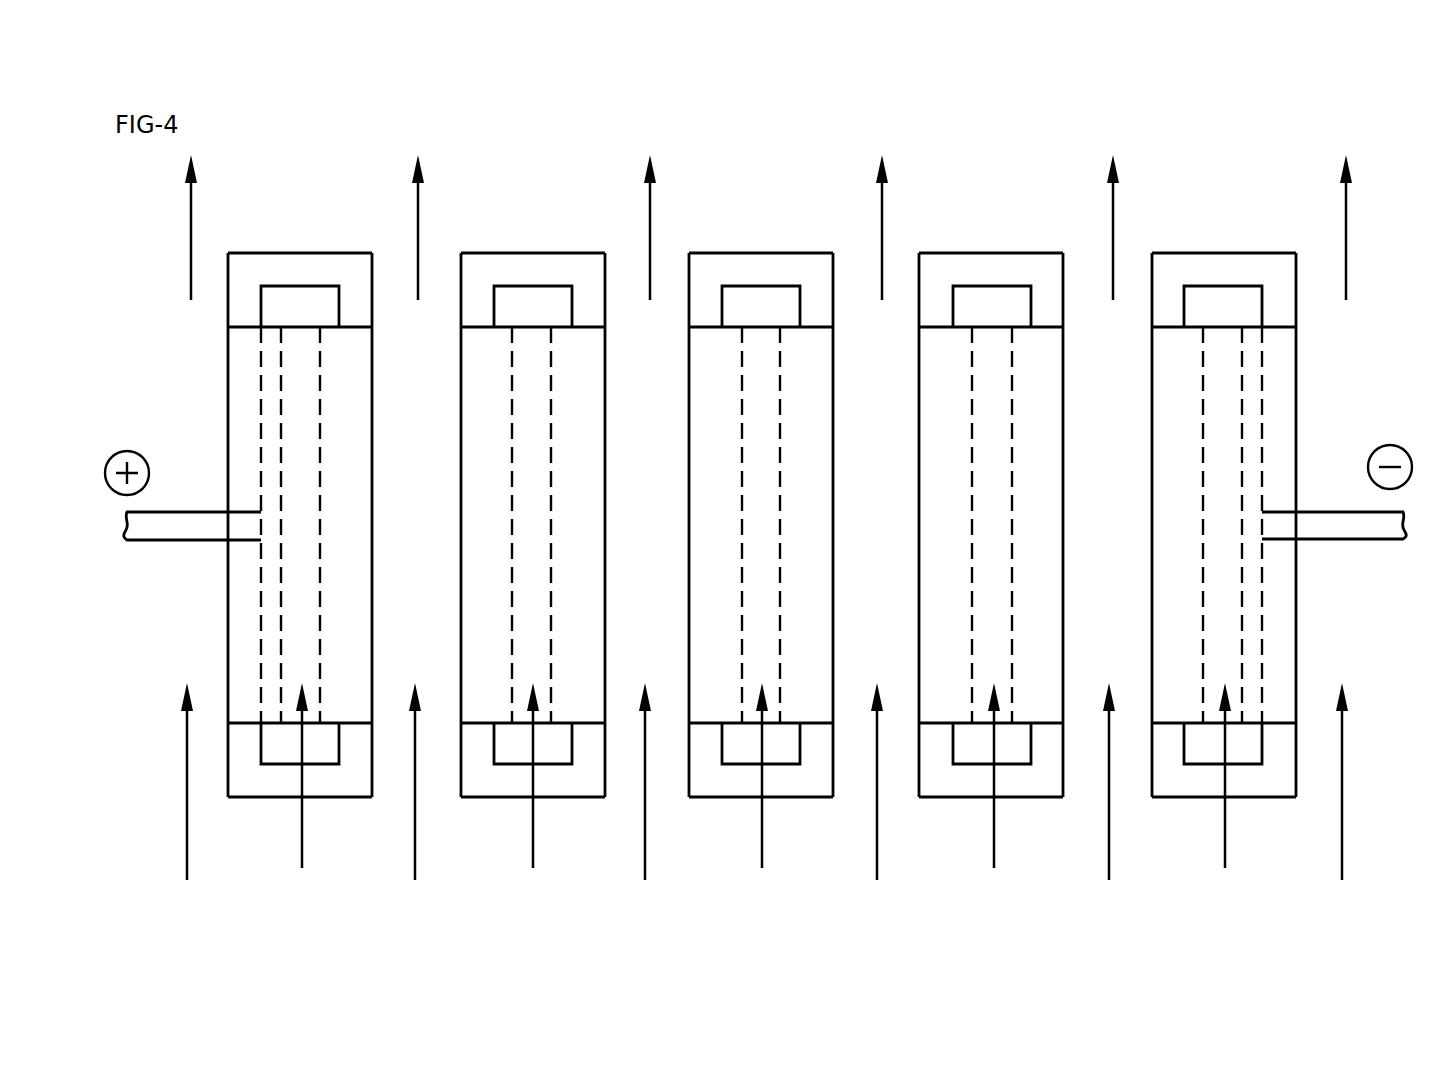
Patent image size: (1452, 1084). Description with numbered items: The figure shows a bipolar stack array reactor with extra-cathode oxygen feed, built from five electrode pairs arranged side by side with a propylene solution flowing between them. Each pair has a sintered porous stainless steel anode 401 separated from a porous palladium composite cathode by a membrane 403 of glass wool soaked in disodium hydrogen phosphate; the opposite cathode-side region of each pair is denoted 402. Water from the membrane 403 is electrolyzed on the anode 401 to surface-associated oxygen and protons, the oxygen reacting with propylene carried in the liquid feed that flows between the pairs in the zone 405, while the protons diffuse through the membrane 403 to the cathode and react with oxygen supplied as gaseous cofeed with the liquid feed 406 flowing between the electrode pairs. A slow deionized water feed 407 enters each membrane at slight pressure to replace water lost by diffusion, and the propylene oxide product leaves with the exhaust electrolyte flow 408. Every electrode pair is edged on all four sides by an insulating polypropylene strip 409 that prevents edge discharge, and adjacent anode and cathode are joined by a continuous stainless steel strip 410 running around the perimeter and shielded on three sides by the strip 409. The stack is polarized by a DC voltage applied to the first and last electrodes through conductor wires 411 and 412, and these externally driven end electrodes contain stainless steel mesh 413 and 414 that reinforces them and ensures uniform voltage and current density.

The anode 401 is at (243, 368).
The cathode chamber 402 is at (337, 368).
The membrane 403 is at (532, 560).
The zone 405 is at (437, 275).
The liquid feed 406 is at (187, 805).
The deionized water feed 407 is at (302, 855).
The exhaust electrolyte flow 408 is at (190, 235).
The polypropylene strip 409 is at (272, 262).
The stainless steel strip 410 is at (308, 296).
The conductor wire 411 is at (1330, 528).
The conductor wire 412 is at (193, 542).
The stainless steel mesh 413 is at (260, 607).
The stainless steel mesh 414 is at (1262, 585).